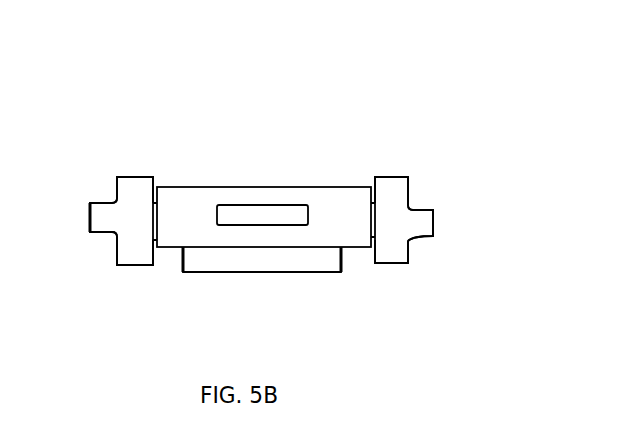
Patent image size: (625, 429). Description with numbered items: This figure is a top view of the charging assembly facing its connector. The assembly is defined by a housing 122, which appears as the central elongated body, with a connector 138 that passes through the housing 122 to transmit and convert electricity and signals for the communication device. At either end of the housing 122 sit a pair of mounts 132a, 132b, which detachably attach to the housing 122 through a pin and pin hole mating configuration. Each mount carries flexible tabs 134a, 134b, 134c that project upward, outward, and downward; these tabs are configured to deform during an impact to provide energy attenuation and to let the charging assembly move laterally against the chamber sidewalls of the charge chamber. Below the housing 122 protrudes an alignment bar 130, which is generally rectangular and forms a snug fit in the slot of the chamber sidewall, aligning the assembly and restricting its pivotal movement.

The housing 122 is at (300, 186).
The alignment bar 130 is at (223, 273).
The mount 132a is at (133, 178).
The mount 132b is at (393, 178).
The flexible tab 134a is at (147, 177).
The flexible tab 134b is at (90, 215).
The flexible tab 134c is at (137, 266).
The connector 138 is at (240, 215).